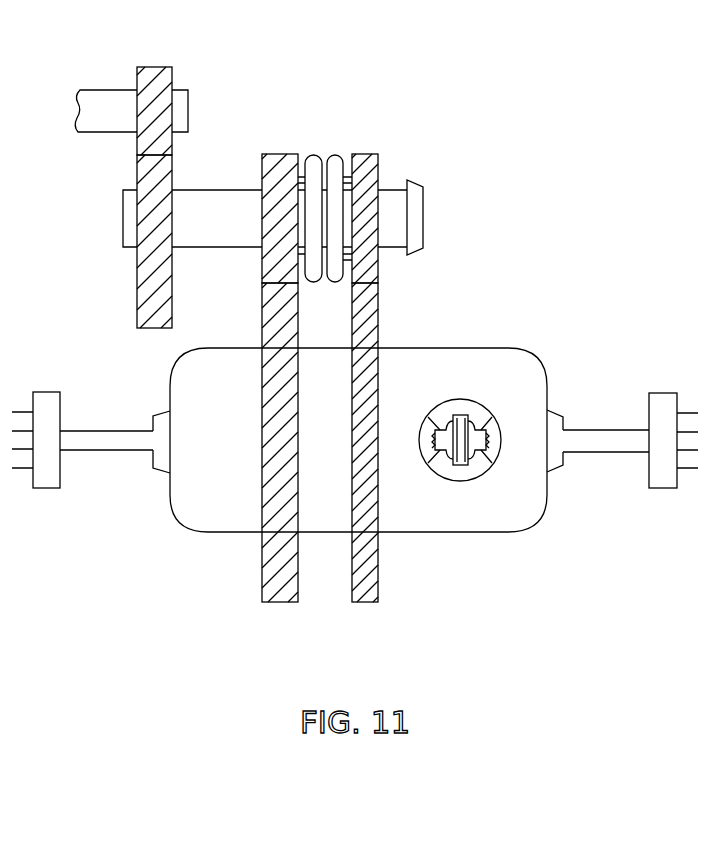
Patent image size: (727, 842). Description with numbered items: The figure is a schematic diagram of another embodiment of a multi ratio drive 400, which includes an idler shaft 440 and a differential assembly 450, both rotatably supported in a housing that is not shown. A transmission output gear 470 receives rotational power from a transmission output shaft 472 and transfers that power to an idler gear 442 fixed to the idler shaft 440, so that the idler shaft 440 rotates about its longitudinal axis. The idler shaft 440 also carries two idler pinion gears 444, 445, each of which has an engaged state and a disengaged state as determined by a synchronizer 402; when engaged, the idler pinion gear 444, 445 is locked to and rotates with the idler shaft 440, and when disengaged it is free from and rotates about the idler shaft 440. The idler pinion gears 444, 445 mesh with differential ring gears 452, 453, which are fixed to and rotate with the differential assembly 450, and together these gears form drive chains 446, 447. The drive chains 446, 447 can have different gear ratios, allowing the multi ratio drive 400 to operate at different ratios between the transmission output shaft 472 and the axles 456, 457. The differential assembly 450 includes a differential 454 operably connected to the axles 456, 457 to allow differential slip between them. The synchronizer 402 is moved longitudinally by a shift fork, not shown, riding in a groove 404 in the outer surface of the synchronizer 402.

The multi ratio drive 400 is at (536, 100).
The synchronizer 402 is at (337, 177).
The groove 404 is at (328, 186).
The idler shaft 440 is at (393, 215).
The idler gear 442 is at (137, 297).
The idler pinion gear 444 is at (280, 177).
The idler pinion gear 445 is at (363, 180).
The drive chain 446 is at (251, 395).
The drive chain 447 is at (387, 387).
The differential assembly 450 is at (483, 355).
The differential ring gear 452 is at (278, 583).
The differential ring gear 453 is at (375, 562).
The differential 454 is at (482, 415).
The axle 456 is at (87, 440).
The axle 457 is at (615, 445).
The transmission output gear 470 is at (150, 72).
The transmission output shaft 472 is at (102, 98).